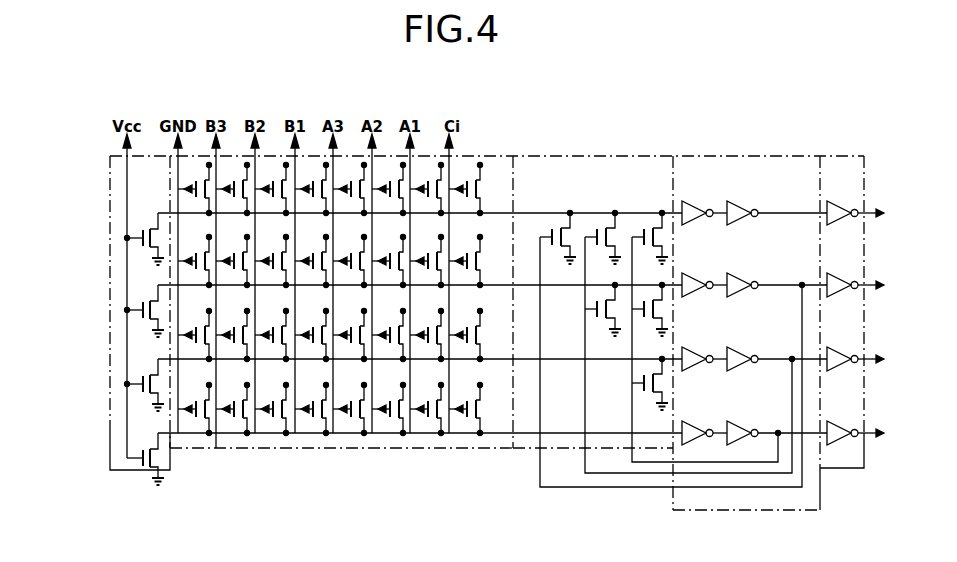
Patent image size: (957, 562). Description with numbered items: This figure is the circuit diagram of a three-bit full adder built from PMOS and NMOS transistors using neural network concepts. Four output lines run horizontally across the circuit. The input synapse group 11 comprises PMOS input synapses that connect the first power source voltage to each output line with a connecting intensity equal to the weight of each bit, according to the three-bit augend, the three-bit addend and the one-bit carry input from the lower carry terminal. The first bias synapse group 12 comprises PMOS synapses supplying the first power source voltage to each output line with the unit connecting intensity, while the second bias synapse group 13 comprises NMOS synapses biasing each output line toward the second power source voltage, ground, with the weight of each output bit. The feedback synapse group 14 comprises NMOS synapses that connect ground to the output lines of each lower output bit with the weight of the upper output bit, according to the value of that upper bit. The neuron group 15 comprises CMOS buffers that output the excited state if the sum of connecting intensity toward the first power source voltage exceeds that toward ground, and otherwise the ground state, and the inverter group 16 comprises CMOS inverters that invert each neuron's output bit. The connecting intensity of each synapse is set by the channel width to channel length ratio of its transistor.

The input synapse group 11 is at (408, 445).
The first bias synapse group 12 is at (187, 444).
The second bias synapse group 13 is at (110, 424).
The feedback synapse group 14 is at (588, 162).
The neuron group 15 is at (718, 166).
The inverter group 16 is at (858, 166).